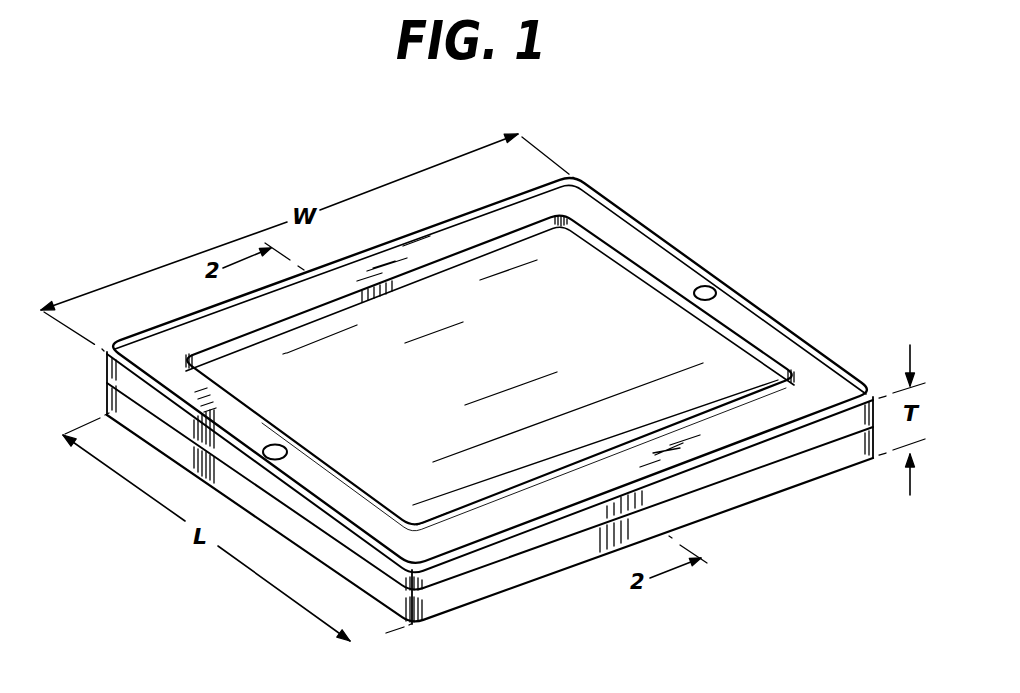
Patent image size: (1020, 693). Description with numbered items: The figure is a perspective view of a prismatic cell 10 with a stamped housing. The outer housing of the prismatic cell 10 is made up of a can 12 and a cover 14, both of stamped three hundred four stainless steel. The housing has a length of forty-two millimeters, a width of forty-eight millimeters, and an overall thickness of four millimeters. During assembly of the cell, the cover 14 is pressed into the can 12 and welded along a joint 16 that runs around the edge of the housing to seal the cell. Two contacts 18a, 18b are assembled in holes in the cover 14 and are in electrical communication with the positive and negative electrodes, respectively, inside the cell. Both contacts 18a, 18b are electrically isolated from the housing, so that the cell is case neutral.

The prismatic cell 10 is at (490, 392).
The can 12 is at (515, 585).
The cover 14 is at (686, 346).
The joint 16 is at (607, 204).
The contact 18a is at (278, 444).
The contact 18b is at (708, 285).